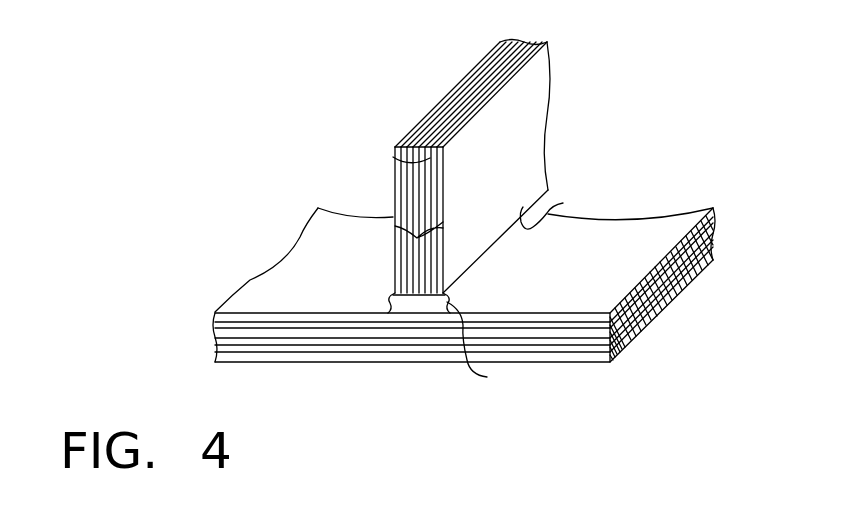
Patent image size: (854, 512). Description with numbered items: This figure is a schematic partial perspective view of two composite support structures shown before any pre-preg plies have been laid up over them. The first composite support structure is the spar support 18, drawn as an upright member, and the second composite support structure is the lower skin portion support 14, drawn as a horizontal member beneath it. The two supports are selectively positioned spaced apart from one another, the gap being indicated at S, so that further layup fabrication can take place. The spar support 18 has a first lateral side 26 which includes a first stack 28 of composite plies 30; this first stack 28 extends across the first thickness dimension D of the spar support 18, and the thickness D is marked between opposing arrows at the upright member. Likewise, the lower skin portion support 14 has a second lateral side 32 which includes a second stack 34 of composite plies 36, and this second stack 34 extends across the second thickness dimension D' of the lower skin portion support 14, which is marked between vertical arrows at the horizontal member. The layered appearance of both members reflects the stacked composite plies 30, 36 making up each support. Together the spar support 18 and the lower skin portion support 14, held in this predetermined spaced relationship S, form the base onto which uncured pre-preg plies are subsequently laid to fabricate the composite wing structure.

The lower skin portion support 14 is at (605, 250).
The spar support 18 is at (522, 130).
The first lateral side 26 is at (385, 266).
The first stack 28 is at (405, 238).
The composite plies 30 is at (410, 165).
The second lateral side 32 is at (273, 348).
The second stack 34 is at (421, 311).
The composite plies 36 is at (597, 317).
The spacing S is at (516, 290).
The first thickness dimension D is at (401, 161).
The second thickness dimension D' is at (298, 336).